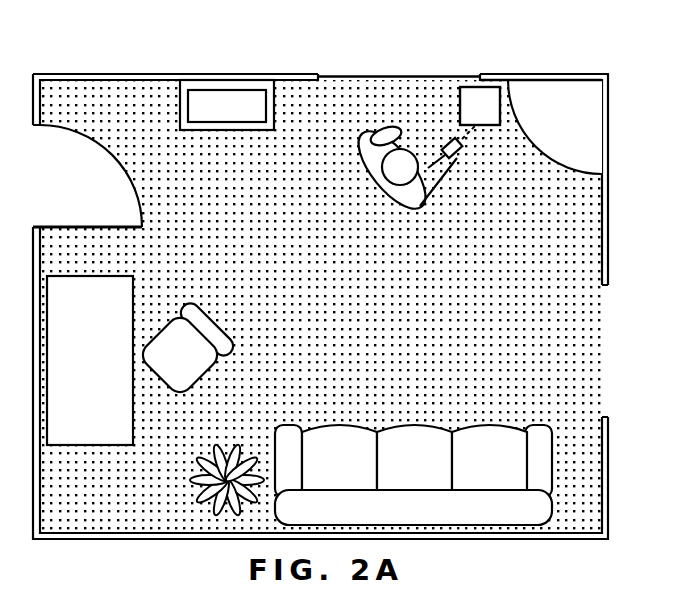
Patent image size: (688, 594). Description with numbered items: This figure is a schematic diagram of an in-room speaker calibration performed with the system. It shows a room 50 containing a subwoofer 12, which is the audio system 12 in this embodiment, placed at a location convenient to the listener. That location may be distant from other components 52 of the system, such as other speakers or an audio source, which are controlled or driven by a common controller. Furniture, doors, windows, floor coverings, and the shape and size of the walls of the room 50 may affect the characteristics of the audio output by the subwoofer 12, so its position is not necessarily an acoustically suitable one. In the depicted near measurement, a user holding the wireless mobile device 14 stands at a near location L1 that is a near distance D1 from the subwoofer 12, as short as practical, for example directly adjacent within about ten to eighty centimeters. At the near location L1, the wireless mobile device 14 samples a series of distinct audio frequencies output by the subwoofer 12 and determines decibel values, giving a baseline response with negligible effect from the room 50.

The room 50 is at (258, 242).
The other components 52 is at (214, 117).
The audio system 12 is at (468, 118).
The wireless mobile device 14 is at (453, 140).
The near distance D1 is at (483, 140).
The near location L1 is at (384, 200).